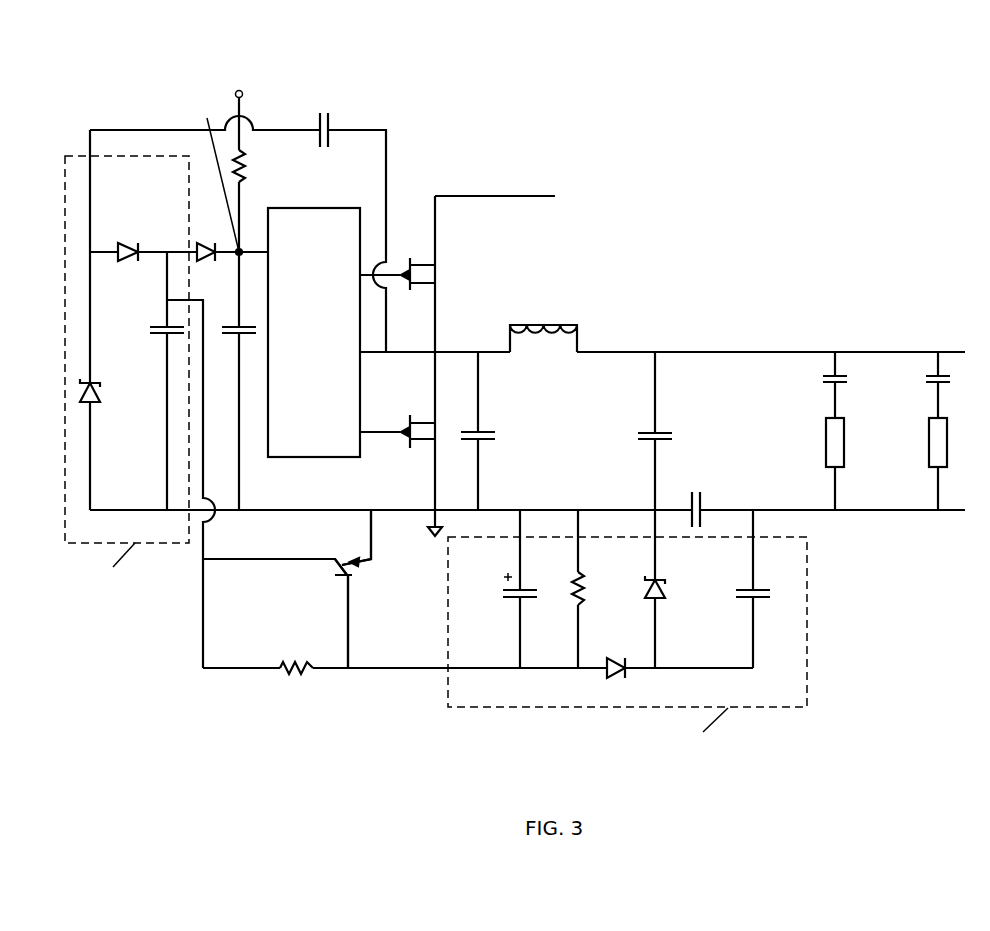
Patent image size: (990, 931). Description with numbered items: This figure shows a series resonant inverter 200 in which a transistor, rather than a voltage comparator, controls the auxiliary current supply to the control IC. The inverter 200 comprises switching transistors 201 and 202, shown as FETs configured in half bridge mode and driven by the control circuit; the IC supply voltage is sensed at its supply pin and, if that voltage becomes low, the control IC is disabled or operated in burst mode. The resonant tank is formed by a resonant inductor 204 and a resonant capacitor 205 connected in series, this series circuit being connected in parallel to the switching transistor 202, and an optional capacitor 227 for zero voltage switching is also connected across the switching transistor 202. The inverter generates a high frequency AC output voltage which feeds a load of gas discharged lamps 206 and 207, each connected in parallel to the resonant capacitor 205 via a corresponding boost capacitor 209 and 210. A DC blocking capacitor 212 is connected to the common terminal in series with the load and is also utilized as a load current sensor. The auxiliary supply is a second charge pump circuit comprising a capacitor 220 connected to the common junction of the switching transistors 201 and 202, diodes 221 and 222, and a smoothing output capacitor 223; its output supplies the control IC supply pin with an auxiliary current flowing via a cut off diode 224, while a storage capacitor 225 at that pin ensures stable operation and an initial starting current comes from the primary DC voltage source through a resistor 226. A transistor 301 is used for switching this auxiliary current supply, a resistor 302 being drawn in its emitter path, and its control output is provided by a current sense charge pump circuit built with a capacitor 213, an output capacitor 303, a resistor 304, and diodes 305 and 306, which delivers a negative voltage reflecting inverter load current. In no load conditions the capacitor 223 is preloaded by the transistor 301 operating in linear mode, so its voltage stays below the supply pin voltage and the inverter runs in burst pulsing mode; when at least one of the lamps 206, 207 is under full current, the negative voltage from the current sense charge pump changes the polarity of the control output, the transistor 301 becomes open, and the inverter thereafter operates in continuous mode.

The series resonant inverter 200 is at (587, 24).
The switching transistor 201 is at (437, 278).
The switching transistor 202 is at (432, 422).
The resonant inductor 204 is at (562, 325).
The resonant capacitor 205 is at (668, 428).
The gas discharged lamp 206 is at (823, 457).
The gas discharged lamp 207 is at (928, 457).
The boost capacitor 209 is at (827, 382).
The boost capacitor 210 is at (932, 382).
The DC blocking capacitor 212 is at (705, 502).
The capacitor 213 is at (748, 598).
The capacitor 220 is at (330, 118).
The diode 221 is at (93, 397).
The diode 222 is at (127, 257).
The smoothing output capacitor 223 is at (158, 333).
The cut off diode 224 is at (203, 243).
The storage capacitor 225 is at (242, 335).
The resistor 226 is at (242, 155).
The capacitor 227 is at (483, 430).
The transistor 301 is at (358, 572).
The resistor 302 is at (298, 678).
The output capacitor 303 is at (512, 597).
The resistor 304 is at (583, 587).
The diode 305 is at (610, 678).
The diode 306 is at (662, 582).